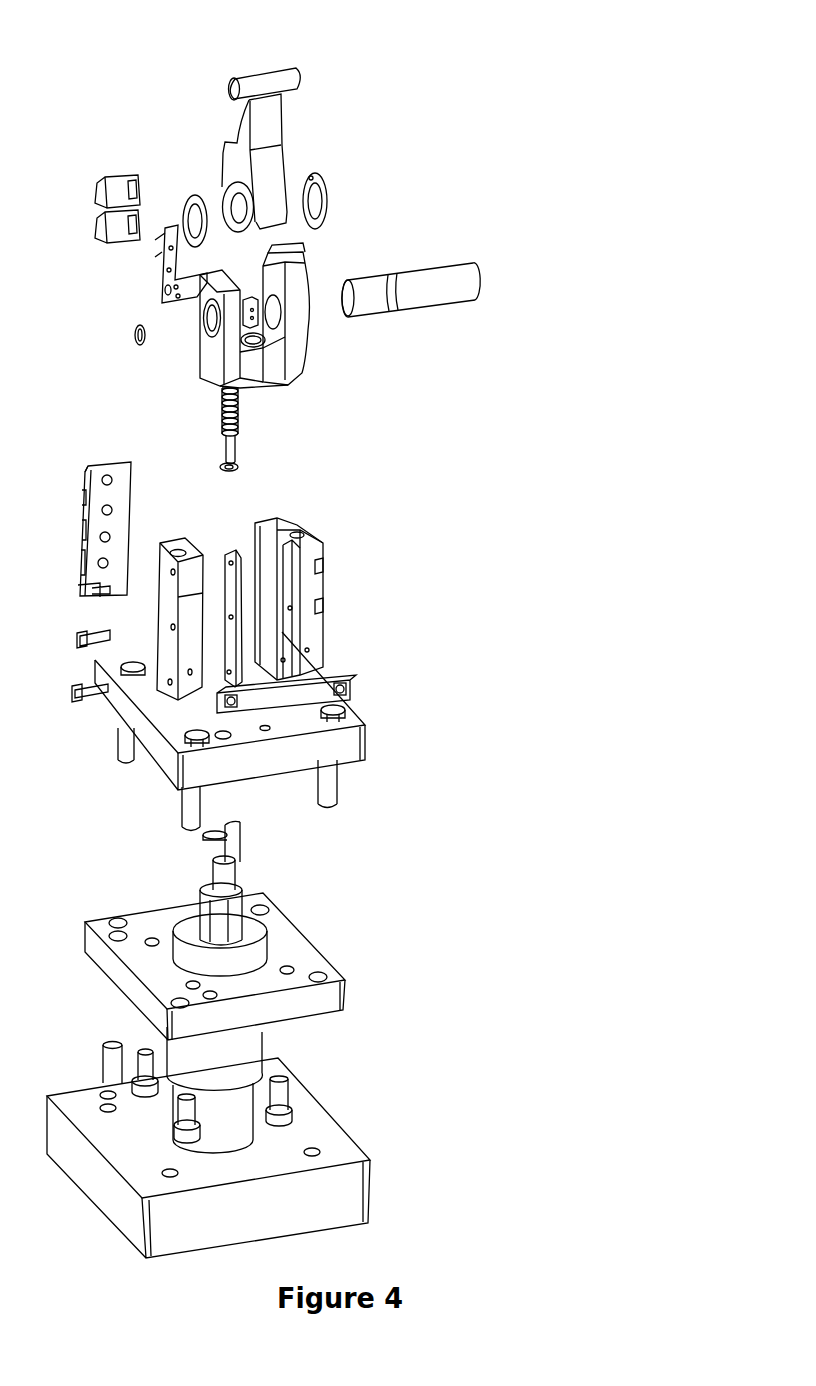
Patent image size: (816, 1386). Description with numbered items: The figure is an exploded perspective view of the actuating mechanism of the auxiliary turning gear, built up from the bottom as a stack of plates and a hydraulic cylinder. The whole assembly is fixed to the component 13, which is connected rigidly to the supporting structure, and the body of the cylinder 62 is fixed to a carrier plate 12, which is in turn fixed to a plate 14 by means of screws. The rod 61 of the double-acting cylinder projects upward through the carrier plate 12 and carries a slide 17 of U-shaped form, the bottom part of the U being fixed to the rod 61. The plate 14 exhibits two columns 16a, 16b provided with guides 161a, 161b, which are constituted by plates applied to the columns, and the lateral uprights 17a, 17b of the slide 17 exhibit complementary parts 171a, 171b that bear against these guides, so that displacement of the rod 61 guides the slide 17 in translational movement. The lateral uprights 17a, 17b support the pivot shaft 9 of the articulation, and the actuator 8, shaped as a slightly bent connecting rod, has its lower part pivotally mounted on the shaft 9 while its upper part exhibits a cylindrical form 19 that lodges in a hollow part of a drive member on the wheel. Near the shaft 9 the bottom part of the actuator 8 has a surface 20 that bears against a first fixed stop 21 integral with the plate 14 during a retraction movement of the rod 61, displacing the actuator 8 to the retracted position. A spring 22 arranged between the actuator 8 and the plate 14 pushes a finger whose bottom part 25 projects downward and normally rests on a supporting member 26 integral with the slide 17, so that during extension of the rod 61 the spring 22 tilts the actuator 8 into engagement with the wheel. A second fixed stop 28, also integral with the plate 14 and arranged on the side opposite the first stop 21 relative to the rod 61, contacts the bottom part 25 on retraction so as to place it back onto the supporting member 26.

The actuator 8 is at (278, 158).
The shaft 9 is at (443, 278).
The carrier plate 12 is at (330, 1002).
The component 13 is at (347, 1155).
The plate 14 is at (353, 742).
The column 16a is at (336, 579).
The column 16b is at (172, 620).
The slide 17 is at (251, 334).
The lateral upright 17a is at (297, 328).
The lateral upright 17b is at (233, 347).
The cylindrical form 19 is at (296, 80).
The surface 20 is at (262, 237).
The first fixed stop 21 is at (340, 680).
The spring 22 is at (240, 412).
The bottom part 25 is at (223, 447).
The supporting member 26 is at (247, 303).
The second fixed stop 28 is at (212, 613).
The rod 61 is at (240, 905).
The body of the cylinder 62 is at (258, 957).
The guide 161a is at (295, 565).
The guide 161b is at (225, 568).
The complementary part 171a is at (305, 253).
The complementary part 171b is at (192, 338).